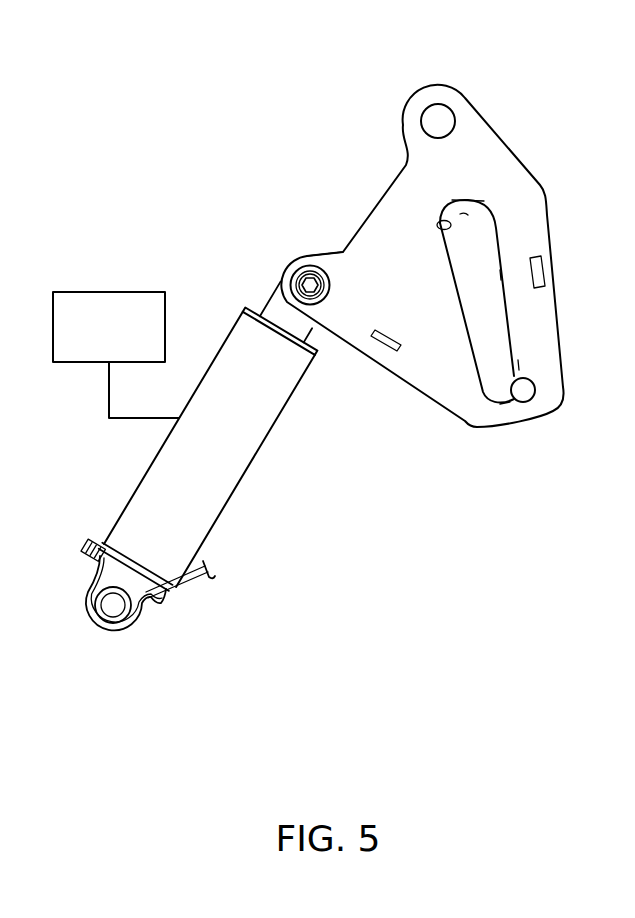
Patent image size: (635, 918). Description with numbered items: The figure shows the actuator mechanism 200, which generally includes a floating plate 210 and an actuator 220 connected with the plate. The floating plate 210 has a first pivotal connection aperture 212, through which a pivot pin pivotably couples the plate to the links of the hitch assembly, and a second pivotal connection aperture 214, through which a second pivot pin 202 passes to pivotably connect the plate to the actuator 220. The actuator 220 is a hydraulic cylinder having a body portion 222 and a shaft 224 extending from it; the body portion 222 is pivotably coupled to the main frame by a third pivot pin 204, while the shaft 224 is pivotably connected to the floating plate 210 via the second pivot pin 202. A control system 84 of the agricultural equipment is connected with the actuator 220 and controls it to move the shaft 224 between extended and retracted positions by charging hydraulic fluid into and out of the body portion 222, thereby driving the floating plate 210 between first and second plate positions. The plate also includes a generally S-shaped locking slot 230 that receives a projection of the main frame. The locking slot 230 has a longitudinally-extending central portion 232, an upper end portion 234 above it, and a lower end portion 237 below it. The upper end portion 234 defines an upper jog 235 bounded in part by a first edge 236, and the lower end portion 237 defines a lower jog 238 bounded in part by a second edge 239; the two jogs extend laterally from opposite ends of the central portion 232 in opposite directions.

The actuator mechanism 200 is at (210, 125).
The floating plate 210 is at (534, 128).
The first pivotal connection aperture 212 is at (440, 87).
The second pivotal connection aperture 214 is at (290, 253).
The second pivot pin 202 is at (311, 280).
The shaft 224 is at (266, 306).
The actuator 220 is at (107, 464).
The body portion 222 is at (232, 490).
The third pivot pin 204 is at (118, 610).
The control system 84 is at (68, 291).
The locking slot 230 is at (512, 222).
The central portion 232 is at (490, 250).
The upper end portion 234 is at (474, 194).
The upper jog 235 is at (462, 212).
The first edge 236 is at (437, 226).
The lower end portion 237 is at (524, 347).
The lower jog 238 is at (531, 390).
The second edge 239 is at (523, 397).